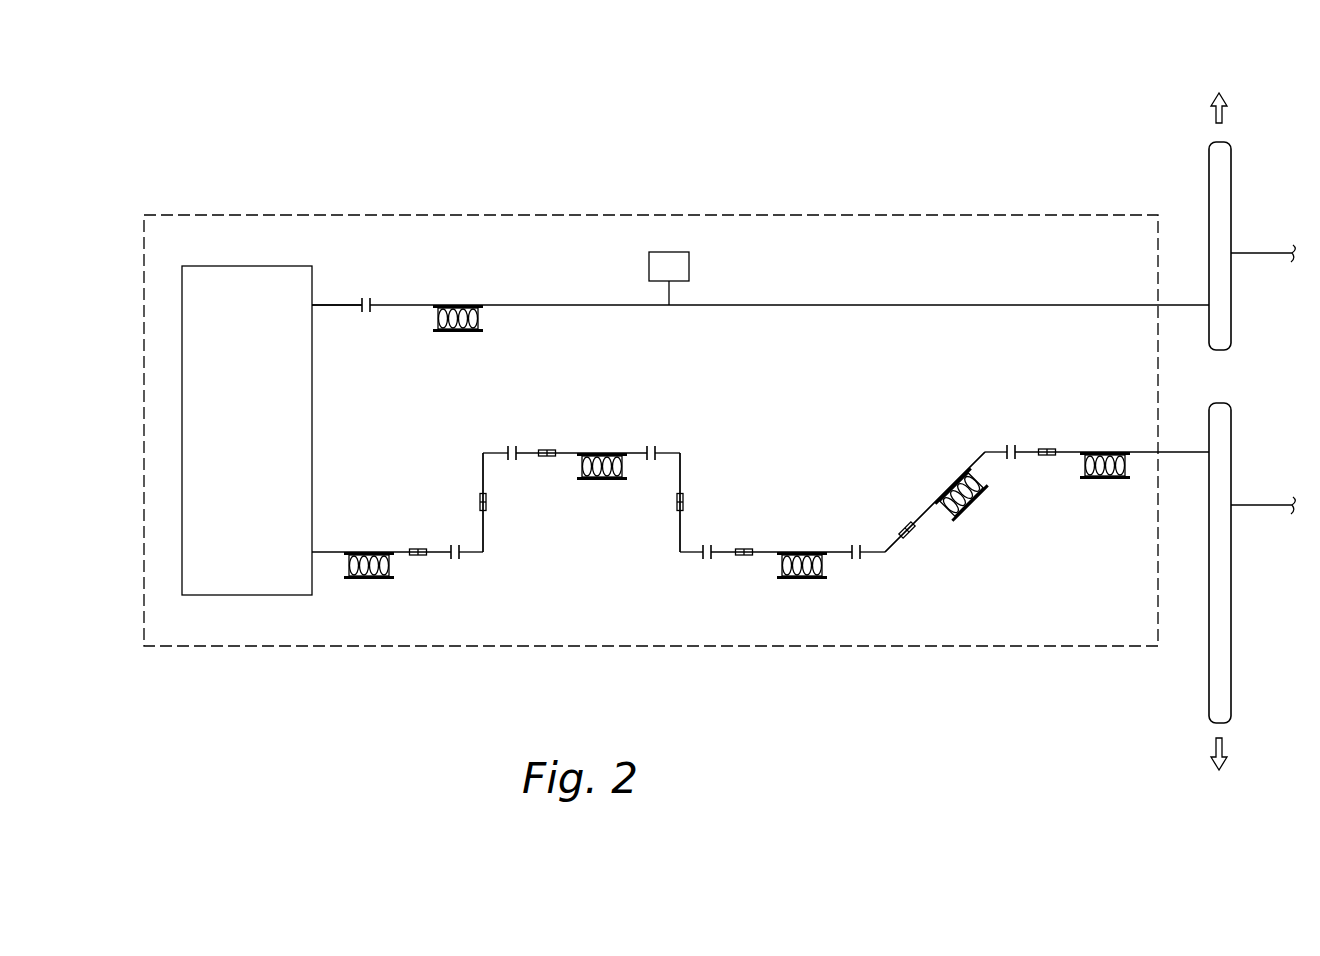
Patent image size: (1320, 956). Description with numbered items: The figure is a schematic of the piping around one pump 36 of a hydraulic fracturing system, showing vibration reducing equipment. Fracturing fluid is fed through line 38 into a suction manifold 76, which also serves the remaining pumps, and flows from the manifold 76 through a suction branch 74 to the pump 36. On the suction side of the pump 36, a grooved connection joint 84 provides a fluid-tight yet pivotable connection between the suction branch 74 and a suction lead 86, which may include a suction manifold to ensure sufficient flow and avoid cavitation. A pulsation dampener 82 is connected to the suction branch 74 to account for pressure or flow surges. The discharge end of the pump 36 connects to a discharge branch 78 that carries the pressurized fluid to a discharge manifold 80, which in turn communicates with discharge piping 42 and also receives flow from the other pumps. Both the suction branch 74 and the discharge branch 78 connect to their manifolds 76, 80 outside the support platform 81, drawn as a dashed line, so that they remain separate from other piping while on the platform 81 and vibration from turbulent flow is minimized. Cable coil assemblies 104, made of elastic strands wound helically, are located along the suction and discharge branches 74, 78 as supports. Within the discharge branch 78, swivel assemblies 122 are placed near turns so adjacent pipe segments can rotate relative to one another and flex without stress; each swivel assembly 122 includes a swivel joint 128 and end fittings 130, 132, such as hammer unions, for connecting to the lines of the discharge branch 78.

The support platform 81 is at (222, 214).
The pump 36 is at (312, 428).
The suction branch 74 is at (878, 304).
The suction lead 86 is at (334, 303).
The grooved connection joint 84 is at (372, 301).
The pulsation dampener 82 is at (690, 265).
The cable coil assembly 104 is at (457, 337).
The discharge branch 78 is at (862, 390).
The swivel assembly 122 is at (474, 471).
The swivel joint 128 is at (410, 550).
The fitting 130 is at (462, 556).
The fitting 132 is at (506, 449).
The suction manifold 76 is at (1209, 174).
The line 38 is at (1265, 252).
The discharge manifold 80 is at (1209, 695).
The discharge piping 42 is at (1265, 508).